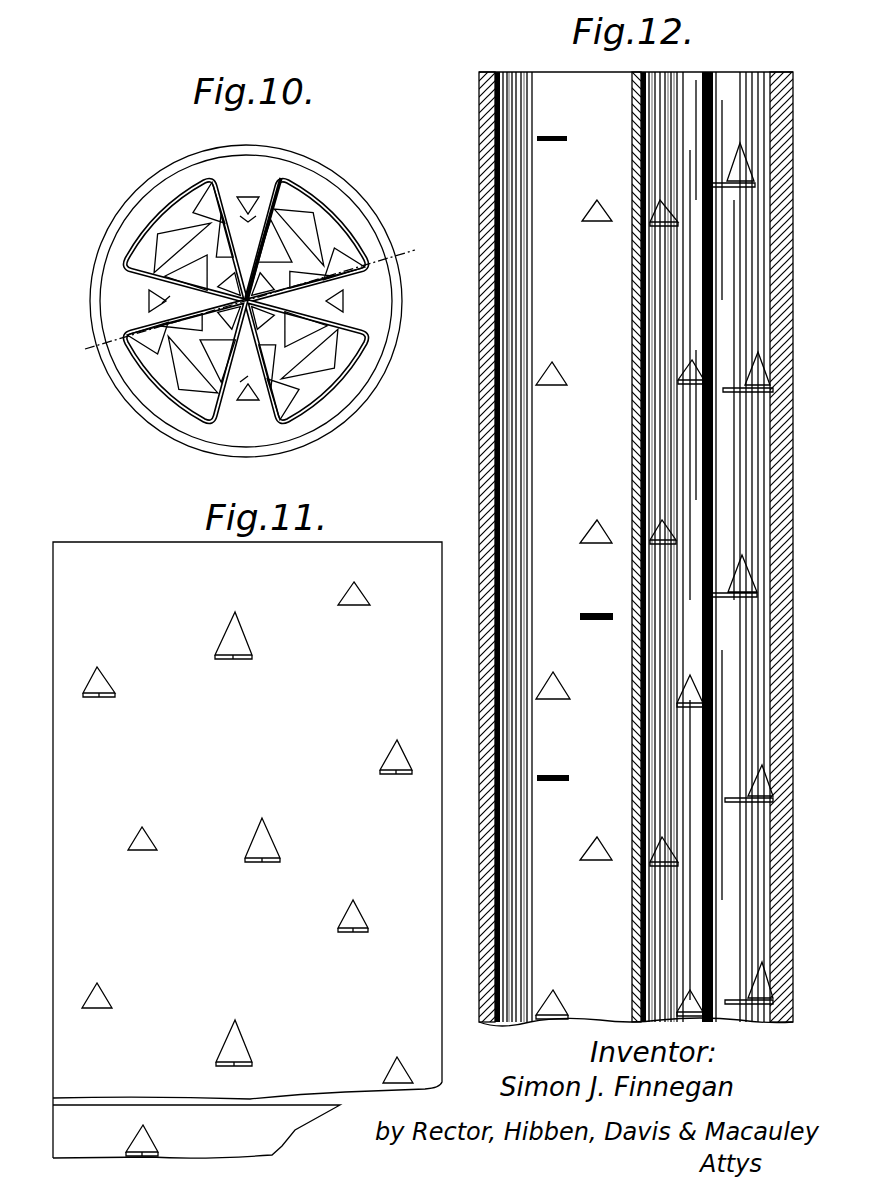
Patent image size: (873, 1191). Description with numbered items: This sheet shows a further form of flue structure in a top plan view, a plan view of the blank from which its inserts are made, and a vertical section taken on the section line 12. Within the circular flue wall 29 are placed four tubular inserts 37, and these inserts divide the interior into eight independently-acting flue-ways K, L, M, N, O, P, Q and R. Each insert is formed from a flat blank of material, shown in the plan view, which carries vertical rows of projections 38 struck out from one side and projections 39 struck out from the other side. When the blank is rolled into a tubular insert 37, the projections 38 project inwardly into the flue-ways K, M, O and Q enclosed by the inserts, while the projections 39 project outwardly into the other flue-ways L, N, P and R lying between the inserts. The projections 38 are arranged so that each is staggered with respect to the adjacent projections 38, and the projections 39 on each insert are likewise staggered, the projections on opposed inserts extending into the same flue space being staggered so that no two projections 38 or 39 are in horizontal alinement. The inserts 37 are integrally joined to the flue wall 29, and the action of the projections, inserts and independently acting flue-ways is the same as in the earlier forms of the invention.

In FIG. 10, the section line 12 is at (411, 246).
In FIG. 12, the flue wall 29 is at (480, 80).
In FIG. 10, the tubular inserts 37 is at (288, 172).
In FIG. 12, the tubular inserts 37 is at (786, 108).
In FIG. 10, the projections 38 is at (246, 301).
In FIG. 11, the projections 38 is at (242, 659).
In FIG. 12, the projections 38 is at (594, 212).
In FIG. 10, the projections 39 is at (244, 304).
In FIG. 11, the projections 39 is at (352, 604).
In FIG. 12, the projections 39 is at (556, 136).
In FIG. 10, the flue-way K is at (322, 226).
In FIG. 10, the flue-way L is at (248, 172).
In FIG. 10, the flue-way M is at (182, 238).
In FIG. 10, the flue-way N is at (132, 292).
In FIG. 10, the flue-way O is at (140, 375).
In FIG. 10, the flue-way P is at (246, 432).
In FIG. 10, the flue-way Q is at (354, 360).
In FIG. 10, the flue-way R is at (378, 292).